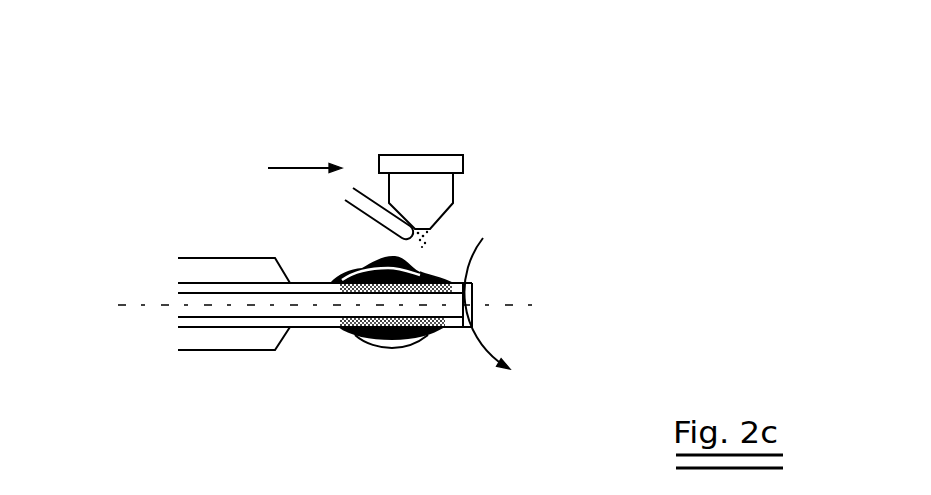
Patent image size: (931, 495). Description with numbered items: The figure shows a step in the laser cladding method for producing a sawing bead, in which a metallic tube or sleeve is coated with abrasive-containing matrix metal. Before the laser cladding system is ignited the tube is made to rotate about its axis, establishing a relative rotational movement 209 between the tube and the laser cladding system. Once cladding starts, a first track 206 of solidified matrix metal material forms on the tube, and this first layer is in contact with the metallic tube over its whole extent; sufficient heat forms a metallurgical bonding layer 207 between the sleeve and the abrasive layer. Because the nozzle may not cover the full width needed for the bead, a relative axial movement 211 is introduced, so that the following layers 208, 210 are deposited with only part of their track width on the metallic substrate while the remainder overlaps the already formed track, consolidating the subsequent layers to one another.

The track of solidified matrix metal material 206 is at (340, 281).
The metallurgical bonding layer 207 is at (430, 325).
The following layer 208 is at (372, 270).
The relative rotational movement 209 is at (481, 350).
The following layer 210 is at (427, 270).
The relative axial movement 211 is at (305, 167).